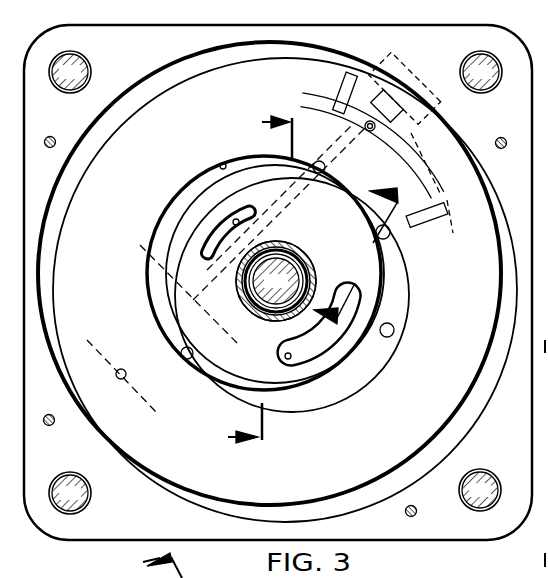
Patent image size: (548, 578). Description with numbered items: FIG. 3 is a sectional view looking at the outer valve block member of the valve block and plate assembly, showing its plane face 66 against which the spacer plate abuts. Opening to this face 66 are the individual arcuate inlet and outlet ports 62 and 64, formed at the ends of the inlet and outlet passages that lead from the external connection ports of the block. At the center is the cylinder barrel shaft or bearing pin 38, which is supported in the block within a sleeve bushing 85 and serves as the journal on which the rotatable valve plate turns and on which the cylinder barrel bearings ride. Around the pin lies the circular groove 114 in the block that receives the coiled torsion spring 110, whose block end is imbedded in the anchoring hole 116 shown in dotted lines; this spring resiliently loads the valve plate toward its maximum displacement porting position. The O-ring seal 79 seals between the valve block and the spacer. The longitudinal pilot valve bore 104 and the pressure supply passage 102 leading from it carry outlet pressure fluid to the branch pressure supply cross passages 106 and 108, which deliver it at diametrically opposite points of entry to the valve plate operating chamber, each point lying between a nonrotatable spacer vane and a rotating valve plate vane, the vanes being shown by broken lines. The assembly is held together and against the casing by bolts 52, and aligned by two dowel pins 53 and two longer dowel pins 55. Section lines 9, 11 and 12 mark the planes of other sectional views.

The section line 9- 9 is at (332, 459).
The section line 11- 11 is at (356, 256).
The section line 12- 12 is at (244, 278).
The cylinder barrel shaft or bearing pin 38 is at (276, 281).
The bolts 52 is at (275, 282).
The dowel pins 53 is at (500, 138).
The dowel pins 55 is at (52, 137).
The arcuate inlet port 62 is at (286, 357).
The arcuate outlet port 64 is at (236, 219).
The plane face 66 is at (278, 282).
The O-ring seal 79 is at (456, 429).
The sleeve bushing 85 is at (315, 272).
The pressure supply passage 102 is at (288, 222).
The longitudinal pilot valve bore 104 is at (114, 332).
The branch pressure supply cross passage 106 is at (371, 132).
The branch pressure supply cross passage 108 is at (120, 380).
The torsion spring 110 is at (156, 229).
The circular recess or groove 114 is at (221, 163).
The anchoring hole 116 is at (317, 161).